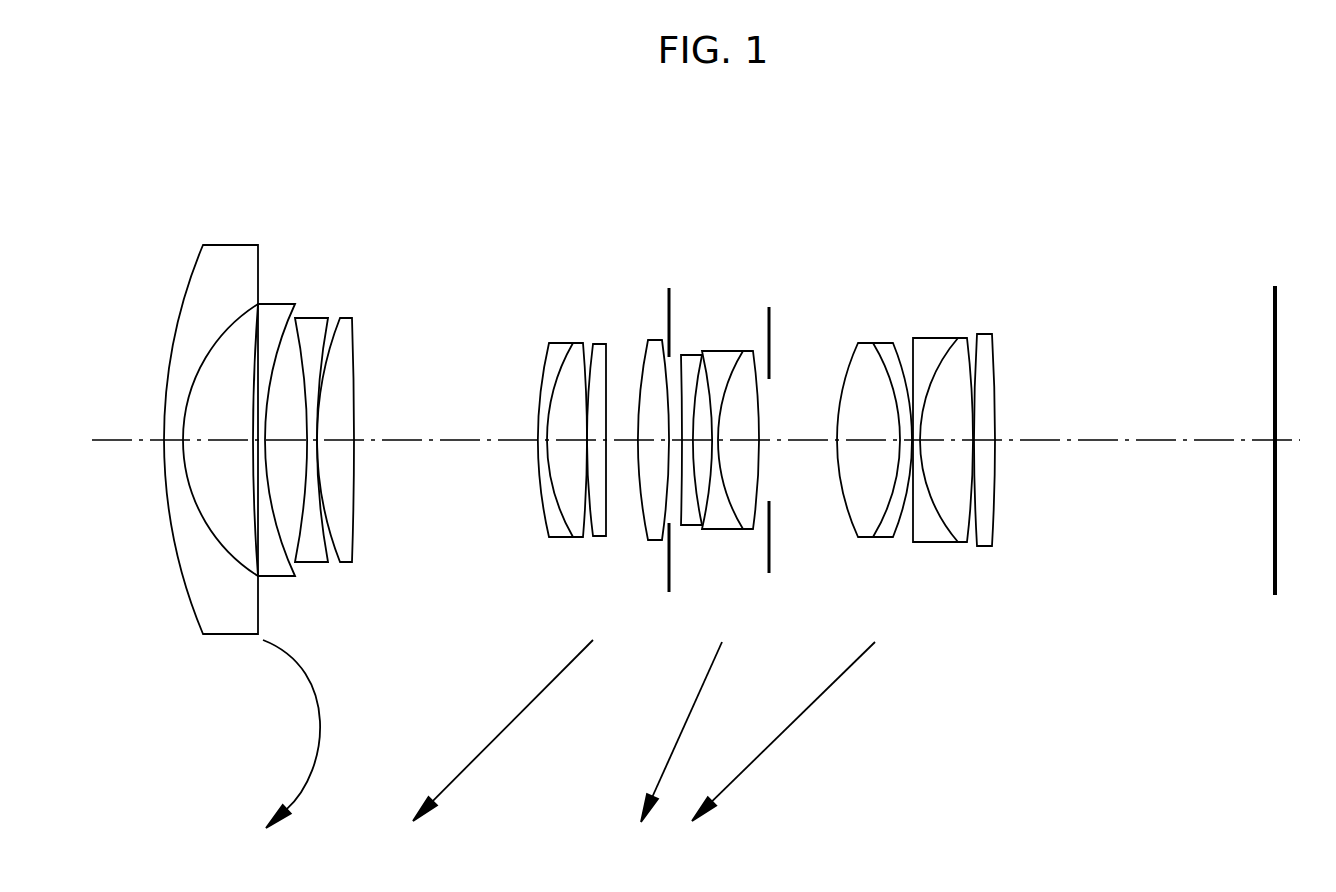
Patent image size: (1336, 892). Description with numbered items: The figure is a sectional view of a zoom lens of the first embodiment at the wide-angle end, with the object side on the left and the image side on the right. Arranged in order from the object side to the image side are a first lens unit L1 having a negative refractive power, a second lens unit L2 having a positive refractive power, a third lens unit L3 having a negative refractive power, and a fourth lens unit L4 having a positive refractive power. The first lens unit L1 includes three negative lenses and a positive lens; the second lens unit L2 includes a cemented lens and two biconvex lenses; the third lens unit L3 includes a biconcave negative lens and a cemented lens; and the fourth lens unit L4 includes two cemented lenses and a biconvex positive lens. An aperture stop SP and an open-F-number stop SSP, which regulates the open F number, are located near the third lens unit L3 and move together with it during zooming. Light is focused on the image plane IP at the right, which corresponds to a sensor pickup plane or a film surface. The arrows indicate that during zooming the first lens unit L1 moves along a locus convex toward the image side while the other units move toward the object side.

The first lens unit L1 is at (358, 171).
The second lens unit L2 is at (670, 143).
The third lens unit L3 is at (670, 177).
The fourth lens unit L4 is at (1003, 171).
The aperture stop SP is at (667, 307).
The open-F-number stop SSP is at (771, 325).
The image plane IP is at (1277, 300).